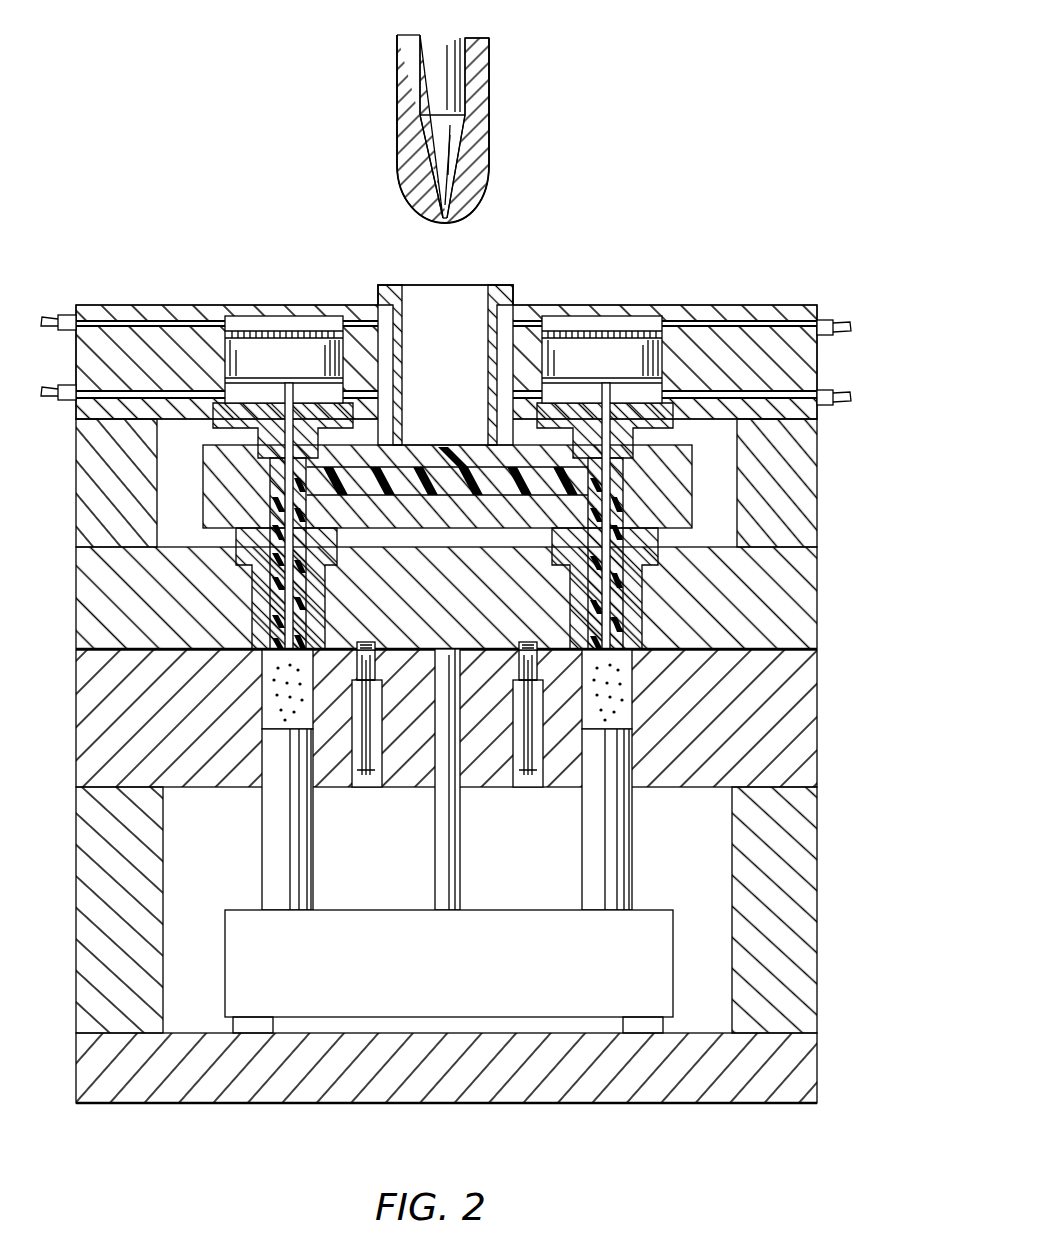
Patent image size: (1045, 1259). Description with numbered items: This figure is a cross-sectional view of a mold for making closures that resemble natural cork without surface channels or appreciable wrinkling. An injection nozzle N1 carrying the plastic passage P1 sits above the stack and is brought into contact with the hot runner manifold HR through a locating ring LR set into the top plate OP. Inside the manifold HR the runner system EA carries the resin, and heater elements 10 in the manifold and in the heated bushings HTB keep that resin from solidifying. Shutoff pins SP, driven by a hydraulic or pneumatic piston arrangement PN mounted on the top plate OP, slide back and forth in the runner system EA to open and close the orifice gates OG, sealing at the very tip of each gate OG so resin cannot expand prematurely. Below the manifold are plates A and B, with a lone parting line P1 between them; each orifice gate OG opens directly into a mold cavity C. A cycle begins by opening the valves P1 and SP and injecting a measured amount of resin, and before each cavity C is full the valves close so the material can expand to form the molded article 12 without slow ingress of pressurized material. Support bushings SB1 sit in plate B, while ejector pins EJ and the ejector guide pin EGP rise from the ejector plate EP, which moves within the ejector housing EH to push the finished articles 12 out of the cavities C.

The parting line / valve P1 is at (447, 80).
The injection nozzle N1 is at (478, 145).
The locating ring LR is at (445, 300).
The piston arrangement PN is at (272, 348).
The top clamping plate OP is at (752, 358).
The heater element 10 is at (405, 475).
The hot runner manifold HR is at (690, 468).
The shutoff pin SP is at (273, 460).
The runner system EA is at (483, 485).
The heated torpedo bushing HTB is at (640, 600).
The plate A is at (805, 630).
The plate B is at (805, 672).
The orifice gate OG is at (262, 652).
The mold cavity C is at (272, 692).
The molded article 12 is at (280, 750).
The support bushing SB1 is at (363, 777).
The ejector pin EJ is at (263, 870).
The ejector guide pin EGP is at (437, 848).
The ejector plate EP is at (464, 985).
The ejector housing EH is at (806, 908).